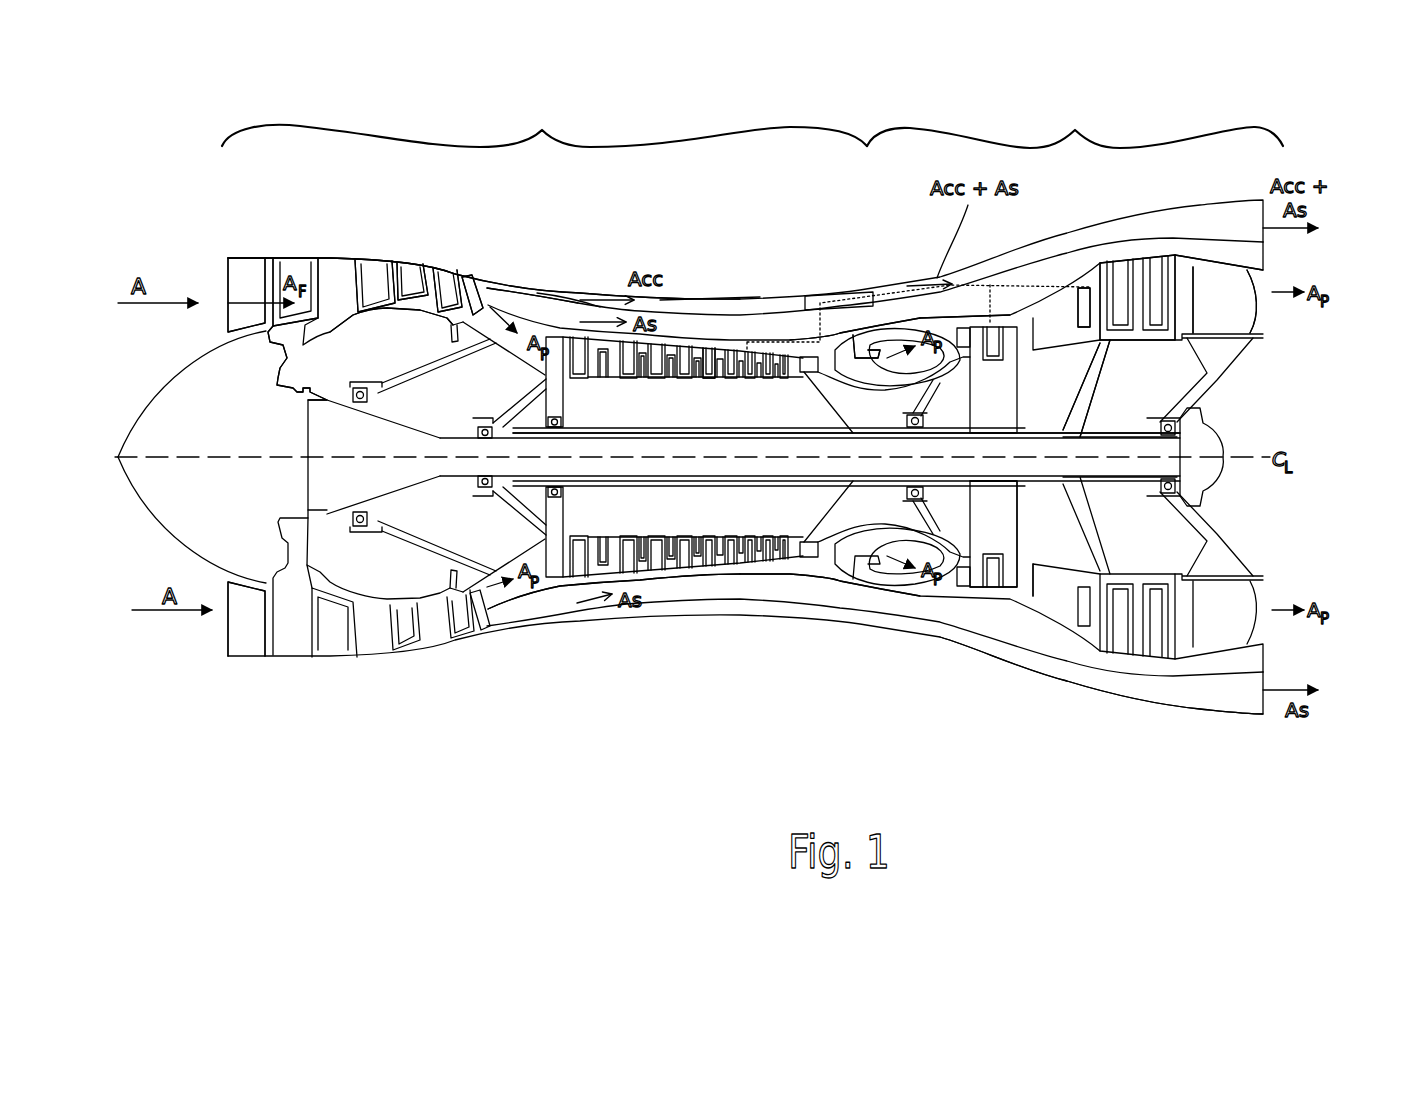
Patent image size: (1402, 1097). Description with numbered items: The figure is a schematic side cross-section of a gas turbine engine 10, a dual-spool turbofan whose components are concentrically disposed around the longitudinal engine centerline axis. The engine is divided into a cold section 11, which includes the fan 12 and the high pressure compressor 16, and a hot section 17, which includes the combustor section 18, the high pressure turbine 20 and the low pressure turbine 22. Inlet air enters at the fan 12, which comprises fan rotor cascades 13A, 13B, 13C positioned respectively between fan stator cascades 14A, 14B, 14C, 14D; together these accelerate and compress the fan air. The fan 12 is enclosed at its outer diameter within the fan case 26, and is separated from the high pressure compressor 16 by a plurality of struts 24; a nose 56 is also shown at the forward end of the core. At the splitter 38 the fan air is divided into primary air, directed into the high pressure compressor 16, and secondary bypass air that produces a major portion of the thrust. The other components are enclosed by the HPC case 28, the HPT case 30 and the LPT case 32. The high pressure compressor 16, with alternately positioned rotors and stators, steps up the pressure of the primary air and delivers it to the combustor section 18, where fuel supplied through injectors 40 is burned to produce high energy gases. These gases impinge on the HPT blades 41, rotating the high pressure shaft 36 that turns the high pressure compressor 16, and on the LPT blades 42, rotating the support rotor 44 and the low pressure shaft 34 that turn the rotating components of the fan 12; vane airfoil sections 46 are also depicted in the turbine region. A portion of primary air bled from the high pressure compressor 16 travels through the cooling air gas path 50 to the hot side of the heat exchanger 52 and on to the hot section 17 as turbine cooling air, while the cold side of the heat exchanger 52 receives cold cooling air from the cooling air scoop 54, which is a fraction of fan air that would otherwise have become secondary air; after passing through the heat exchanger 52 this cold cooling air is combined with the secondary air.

The gas turbine engine 10 is at (934, 78).
The cold section 11 is at (544, 123).
The fan 12 is at (296, 670).
The fan rotor cascade 13A is at (287, 320).
The fan rotor cascade 13B is at (370, 290).
The fan rotor cascade 13C is at (433, 300).
The fan stator cascade 14A is at (253, 285).
The fan stator cascade 14B is at (340, 273).
The fan stator cascade 14C is at (413, 273).
The fan stator cascade 14D is at (456, 297).
The high pressure compressor 16 is at (733, 580).
The hot section 17 is at (1075, 124).
The combustor section 18 is at (912, 320).
The high pressure turbine 20 is at (980, 612).
The low pressure turbine 22 is at (1106, 663).
The struts 24 is at (536, 292).
The fan case 26 is at (305, 257).
The HPC case 28 is at (707, 355).
The HPT case 30 is at (1027, 312).
The LPT case 32 is at (1177, 273).
The low pressure shaft 34 is at (780, 447).
The high pressure shaft 36 is at (832, 578).
The splitter 38 is at (510, 280).
The injectors 40 is at (866, 335).
The HPT blades 41 is at (1007, 590).
The LPT blades 42 is at (1103, 303).
The support rotor 44 is at (1107, 387).
The vane airfoil sections 46 is at (1123, 290).
The cooling air gas path 50 is at (850, 303).
The heat exchanger 52 is at (840, 290).
The cooling air scoop 54 is at (696, 296).
The nose 56 is at (463, 283).